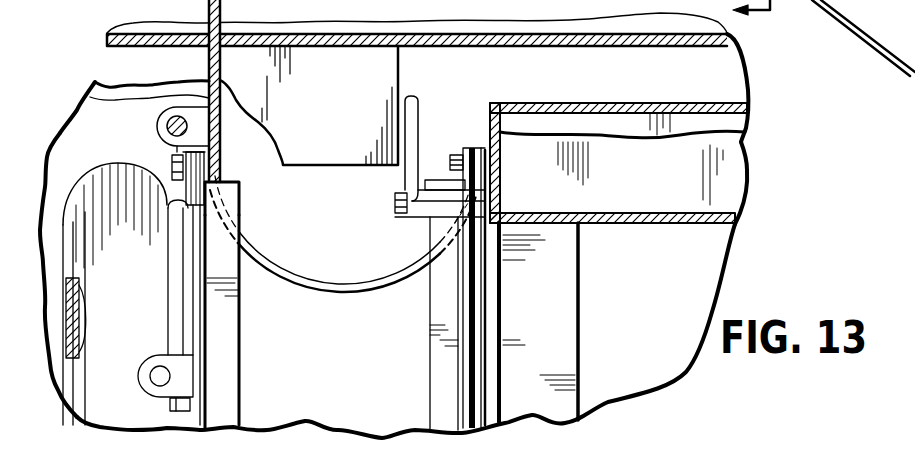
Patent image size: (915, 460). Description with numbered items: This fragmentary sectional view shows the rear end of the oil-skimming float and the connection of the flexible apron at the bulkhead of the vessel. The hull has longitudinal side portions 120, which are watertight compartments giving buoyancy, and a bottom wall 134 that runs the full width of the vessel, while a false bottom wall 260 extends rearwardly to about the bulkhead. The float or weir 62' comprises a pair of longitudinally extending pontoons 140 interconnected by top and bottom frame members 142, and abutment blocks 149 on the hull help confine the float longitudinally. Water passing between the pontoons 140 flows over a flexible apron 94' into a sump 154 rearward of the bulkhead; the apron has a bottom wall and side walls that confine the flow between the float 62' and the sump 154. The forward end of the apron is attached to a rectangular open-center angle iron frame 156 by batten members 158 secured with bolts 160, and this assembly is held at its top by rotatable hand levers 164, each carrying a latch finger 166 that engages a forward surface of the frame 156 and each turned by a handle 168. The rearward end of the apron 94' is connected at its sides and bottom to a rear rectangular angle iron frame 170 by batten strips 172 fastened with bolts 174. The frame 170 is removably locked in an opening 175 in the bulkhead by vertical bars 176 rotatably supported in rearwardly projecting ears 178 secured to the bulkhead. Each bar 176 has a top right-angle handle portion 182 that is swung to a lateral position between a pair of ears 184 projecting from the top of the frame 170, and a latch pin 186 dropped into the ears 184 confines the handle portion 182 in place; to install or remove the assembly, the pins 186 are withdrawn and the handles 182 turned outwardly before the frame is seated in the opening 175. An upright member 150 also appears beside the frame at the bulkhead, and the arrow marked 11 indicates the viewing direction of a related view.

The section view direction arrow 11 is at (763, 10).
The float or weir 62' is at (641, 163).
The flexible apron 94' is at (266, 309).
The longitudinal side portions 120 is at (617, 24).
The bottom wall 134 is at (75, 120).
The pontoons 140 is at (736, 220).
The top and bottom frame members 142 is at (553, 405).
The abutment blocks 149 is at (297, 72).
The vertical post 150 is at (209, 68).
The sump 154 is at (70, 143).
The angle iron frame 156 is at (443, 413).
The batten members 158 is at (483, 427).
The bolts 160 is at (453, 158).
The hand levers 164 is at (428, 214).
The latch finger 166 is at (455, 222).
The handles 168 is at (412, 96).
The rear angle iron frame 170 is at (222, 407).
The batten strips 172 is at (175, 155).
The bolts 174 is at (177, 168).
The opening 175 is at (222, 181).
The vertical bars 176 is at (167, 123).
The rearwardly projecting ears 178 is at (110, 98).
The handle portion 182 is at (180, 412).
The ears 184 is at (163, 398).
The latch pin 186 is at (147, 390).
The false bottom wall 260 is at (320, 232).